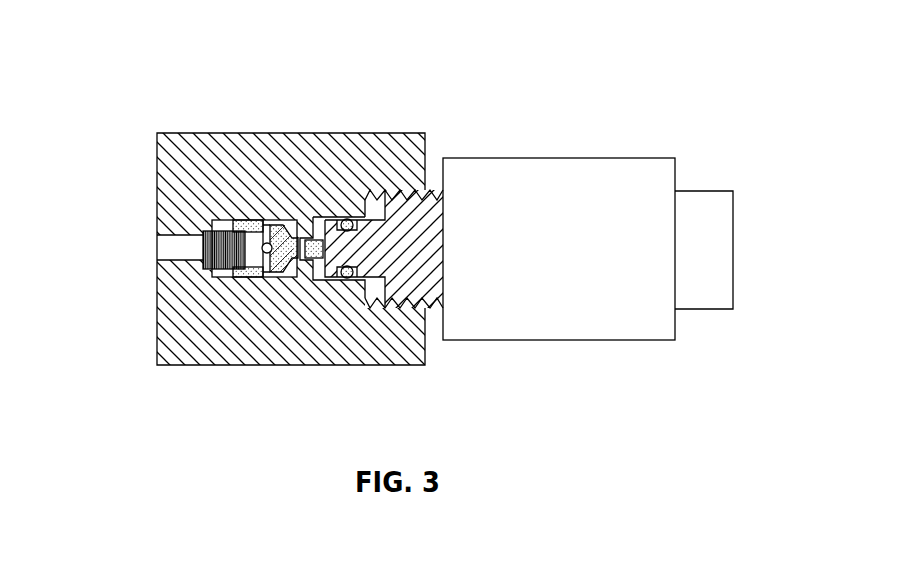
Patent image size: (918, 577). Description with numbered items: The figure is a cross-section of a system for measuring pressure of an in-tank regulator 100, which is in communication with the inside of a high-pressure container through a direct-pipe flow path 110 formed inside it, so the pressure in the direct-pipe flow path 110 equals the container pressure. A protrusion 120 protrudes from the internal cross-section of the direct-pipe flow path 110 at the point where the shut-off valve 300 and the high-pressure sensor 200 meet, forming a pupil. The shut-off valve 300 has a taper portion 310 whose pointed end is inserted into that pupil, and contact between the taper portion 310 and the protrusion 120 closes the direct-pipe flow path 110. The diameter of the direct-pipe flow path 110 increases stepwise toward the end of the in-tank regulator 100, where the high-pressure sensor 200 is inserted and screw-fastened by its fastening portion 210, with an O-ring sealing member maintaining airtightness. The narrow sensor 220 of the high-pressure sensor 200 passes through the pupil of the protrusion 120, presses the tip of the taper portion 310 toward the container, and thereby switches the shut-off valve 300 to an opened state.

The in-tank regulator 100 is at (289, 128).
The direct-pipe flow path 110 is at (173, 249).
The protrusion of direct-pipe flow path 120 is at (297, 220).
The high-pressure sensor 200 is at (551, 145).
The fastening portion of high-pressure sensor 210 is at (398, 190).
The sensor of high-pressure sensor 220 is at (315, 240).
The shut-off valve 300 is at (241, 284).
The taper portion of shut-off valve 310 is at (284, 262).